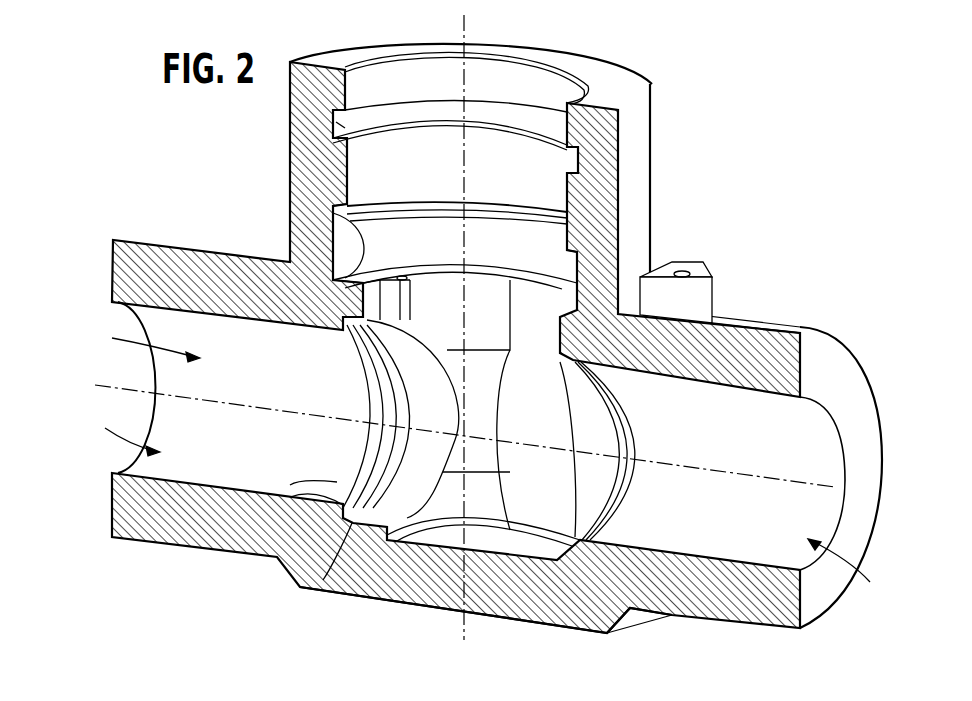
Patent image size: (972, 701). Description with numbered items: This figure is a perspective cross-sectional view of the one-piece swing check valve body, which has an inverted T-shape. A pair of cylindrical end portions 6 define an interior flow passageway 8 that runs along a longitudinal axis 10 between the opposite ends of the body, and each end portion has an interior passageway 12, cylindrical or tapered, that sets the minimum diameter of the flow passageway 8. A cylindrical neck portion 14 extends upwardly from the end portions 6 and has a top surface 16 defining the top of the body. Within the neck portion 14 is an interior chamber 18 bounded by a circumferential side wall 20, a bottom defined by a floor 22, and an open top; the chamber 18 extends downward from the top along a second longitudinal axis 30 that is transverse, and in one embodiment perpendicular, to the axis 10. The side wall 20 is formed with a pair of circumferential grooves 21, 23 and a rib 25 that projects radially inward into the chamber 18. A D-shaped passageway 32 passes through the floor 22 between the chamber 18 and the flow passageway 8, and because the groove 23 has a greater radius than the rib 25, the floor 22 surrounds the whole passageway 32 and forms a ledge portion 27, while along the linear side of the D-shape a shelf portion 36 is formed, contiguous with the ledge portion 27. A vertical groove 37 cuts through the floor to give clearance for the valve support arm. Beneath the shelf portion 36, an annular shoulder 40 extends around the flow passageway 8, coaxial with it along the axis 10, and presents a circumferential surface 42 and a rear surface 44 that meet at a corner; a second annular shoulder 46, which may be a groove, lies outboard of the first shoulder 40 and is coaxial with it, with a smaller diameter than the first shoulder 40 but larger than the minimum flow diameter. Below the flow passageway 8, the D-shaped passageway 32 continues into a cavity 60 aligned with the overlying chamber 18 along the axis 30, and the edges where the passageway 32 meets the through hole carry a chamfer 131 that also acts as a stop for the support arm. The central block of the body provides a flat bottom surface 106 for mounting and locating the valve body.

The cylindrical end portion 6 is at (760, 330).
The interior flow passageway 8 is at (148, 344).
The longitudinal axis 10 is at (800, 483).
The interior passageway 12 is at (485, 508).
The neck portion 14 is at (648, 120).
The top surface 16 is at (626, 78).
The interior chamber 18 is at (577, 268).
The circumferential side wall 20 is at (645, 280).
The circumferential groove 21 is at (333, 127).
The floor 22 is at (293, 233).
The circumferential groove 23 is at (347, 200).
The rib 25 is at (533, 210).
The ledge portion 27 is at (497, 263).
The longitudinal axis 30 is at (468, 640).
The D-shaped passageway 32 is at (478, 284).
The shelf portion 36 is at (348, 244).
The vertical groove 37 is at (382, 302).
The annular shoulder 40 is at (360, 523).
The circumferential surface 42 is at (438, 410).
The rear surface 44 is at (323, 580).
The second annular shoulder 46 is at (290, 485).
The cavity 60 is at (524, 553).
The flat bottom surface 106 is at (598, 632).
The chamfer 131 is at (676, 322).